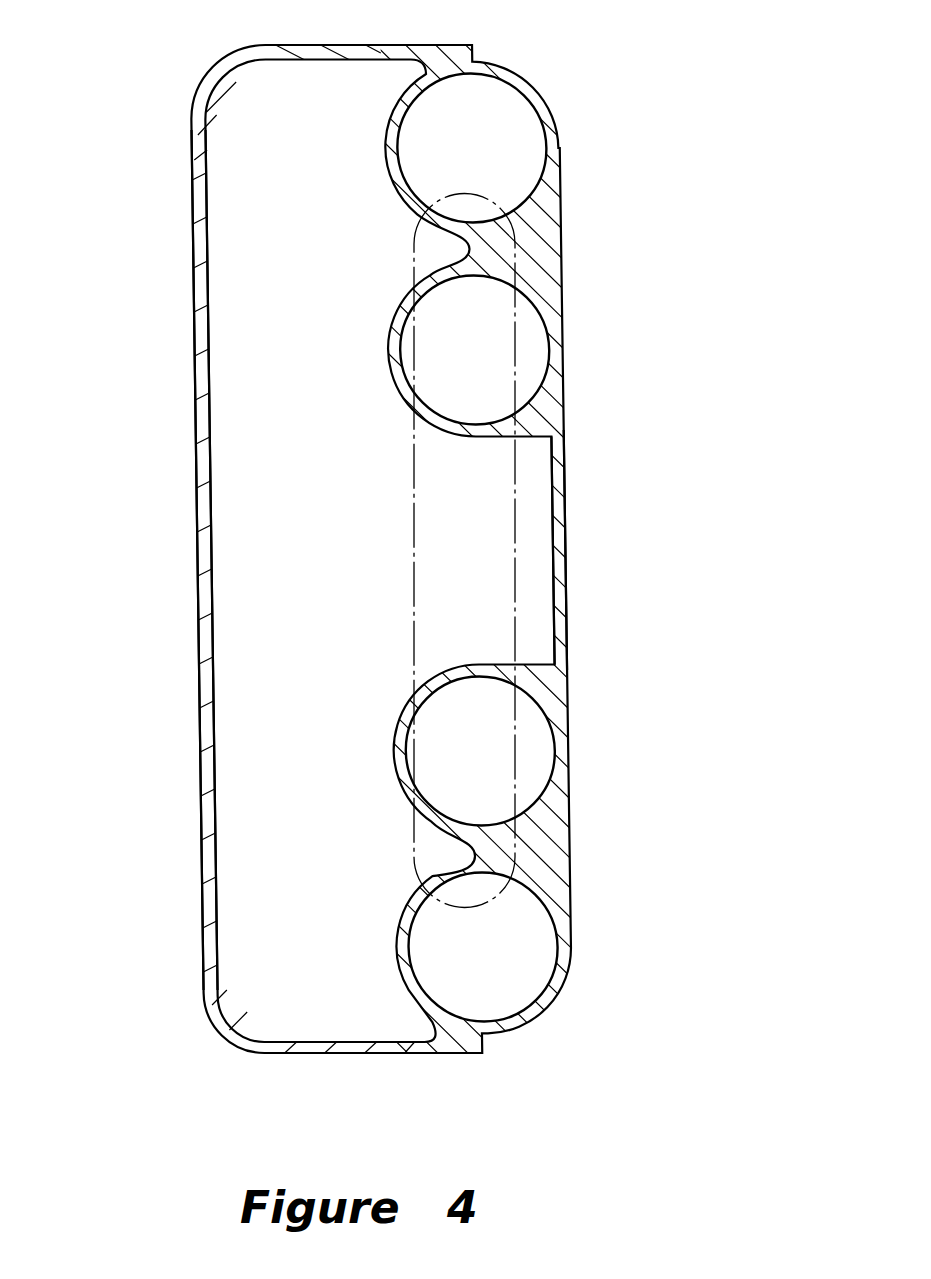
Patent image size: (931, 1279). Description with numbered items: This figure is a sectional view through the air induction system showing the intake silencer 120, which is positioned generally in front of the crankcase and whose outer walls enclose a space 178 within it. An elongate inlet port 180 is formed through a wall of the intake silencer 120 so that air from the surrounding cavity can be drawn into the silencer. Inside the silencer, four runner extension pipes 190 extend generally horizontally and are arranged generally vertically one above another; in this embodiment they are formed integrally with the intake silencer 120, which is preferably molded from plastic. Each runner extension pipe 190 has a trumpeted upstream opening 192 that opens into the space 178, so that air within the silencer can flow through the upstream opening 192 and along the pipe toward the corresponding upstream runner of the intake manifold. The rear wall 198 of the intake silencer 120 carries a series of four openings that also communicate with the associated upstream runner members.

The intake silencer 120 is at (465, 550).
The space 178 is at (205, 560).
The elongate inlet port 180 is at (413, 498).
The runner extension pipe 190 is at (382, 551).
The upstream opening 192 is at (477, 548).
The rear wall 198 is at (559, 550).